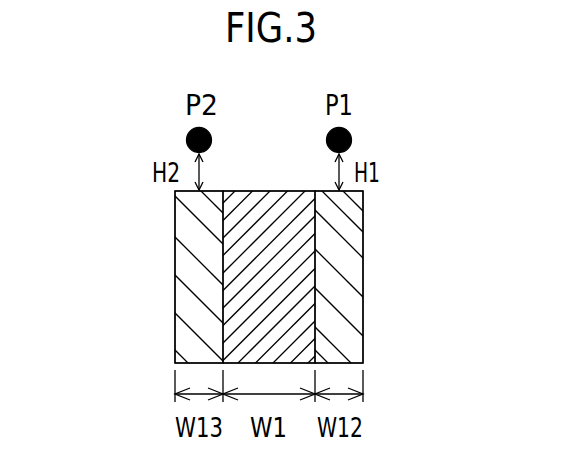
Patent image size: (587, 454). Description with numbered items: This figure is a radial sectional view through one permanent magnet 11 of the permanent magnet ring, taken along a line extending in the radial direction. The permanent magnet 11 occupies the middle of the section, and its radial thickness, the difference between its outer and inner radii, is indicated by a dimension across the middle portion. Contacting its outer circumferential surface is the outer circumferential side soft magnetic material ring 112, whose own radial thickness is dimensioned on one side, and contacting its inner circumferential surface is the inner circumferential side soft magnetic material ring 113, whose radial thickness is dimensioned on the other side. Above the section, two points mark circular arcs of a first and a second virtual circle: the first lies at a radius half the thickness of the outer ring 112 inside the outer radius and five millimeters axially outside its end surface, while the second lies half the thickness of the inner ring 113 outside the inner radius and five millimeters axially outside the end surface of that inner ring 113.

The permanent magnet 11 is at (267, 190).
The outer circumferential side soft magnetic material ring 112 is at (353, 253).
The inner circumferential side soft magnetic material ring 113 is at (190, 270).